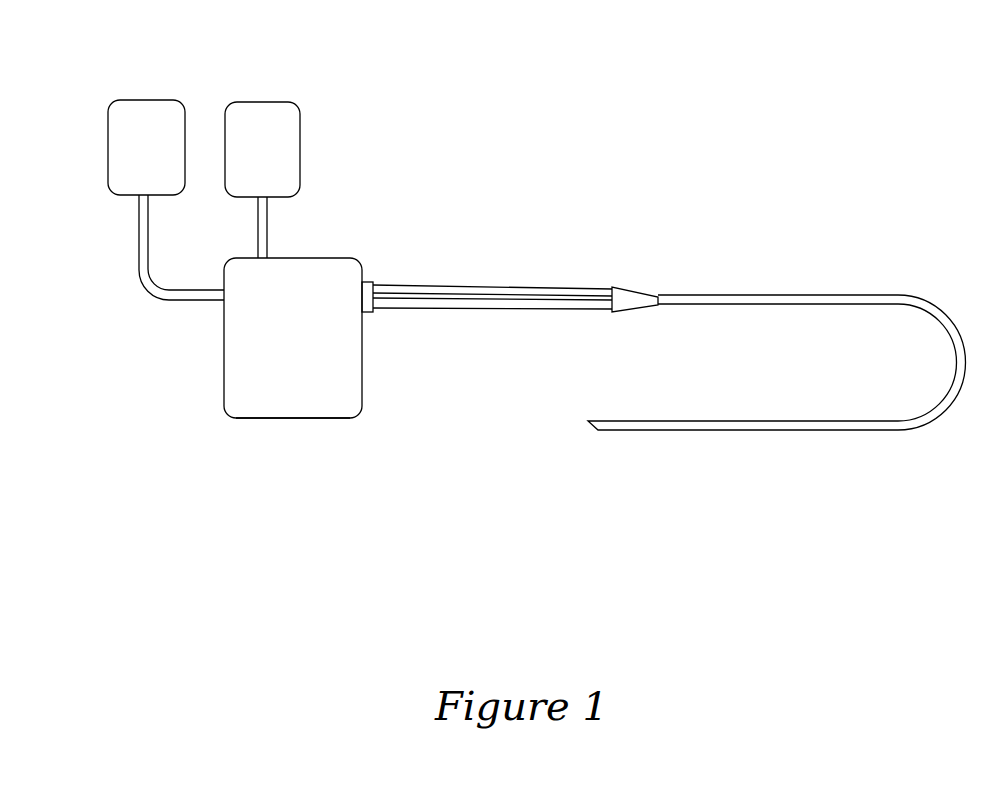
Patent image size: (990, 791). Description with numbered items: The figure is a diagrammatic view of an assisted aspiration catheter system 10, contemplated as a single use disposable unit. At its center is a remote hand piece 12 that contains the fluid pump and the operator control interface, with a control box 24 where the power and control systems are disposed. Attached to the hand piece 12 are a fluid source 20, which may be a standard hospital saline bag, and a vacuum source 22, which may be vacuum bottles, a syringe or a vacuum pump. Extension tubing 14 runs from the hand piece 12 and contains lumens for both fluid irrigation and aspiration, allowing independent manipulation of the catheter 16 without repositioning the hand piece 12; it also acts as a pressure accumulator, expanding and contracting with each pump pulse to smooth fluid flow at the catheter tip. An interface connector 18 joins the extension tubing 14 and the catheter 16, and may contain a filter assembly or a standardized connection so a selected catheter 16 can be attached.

The assisted aspiration catheter system 10 is at (613, 130).
The remote hand piece 12 is at (236, 348).
The extension tubing 14 is at (493, 286).
The catheter 16 is at (850, 295).
The interface connector 18 is at (635, 290).
The fluid source 20 is at (147, 100).
The vacuum source 22 is at (265, 102).
The control box 24 is at (292, 410).